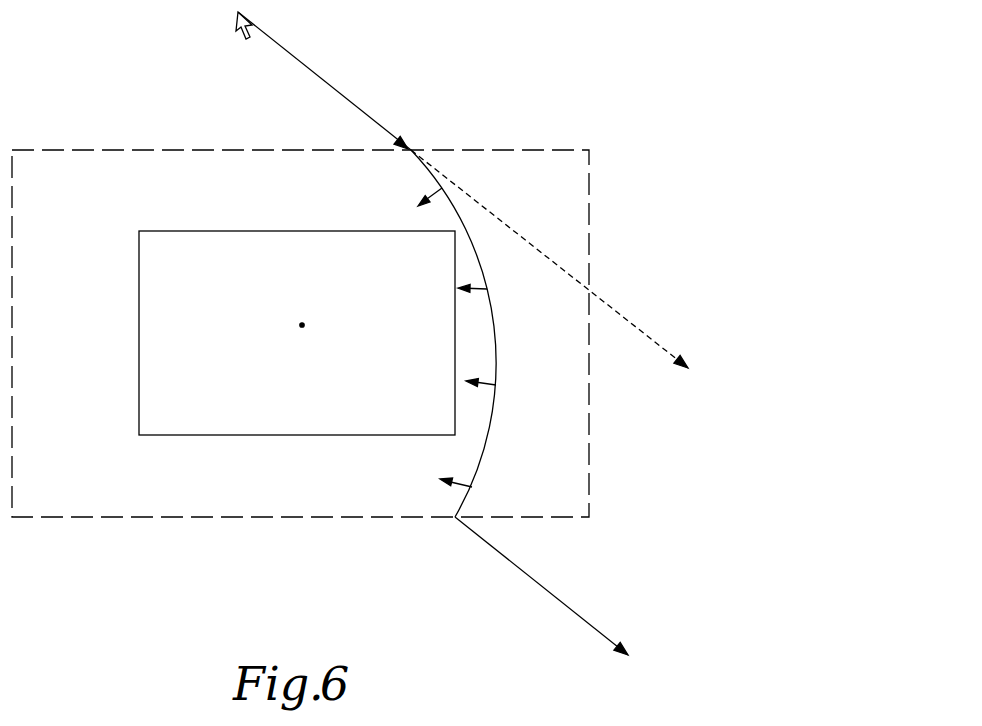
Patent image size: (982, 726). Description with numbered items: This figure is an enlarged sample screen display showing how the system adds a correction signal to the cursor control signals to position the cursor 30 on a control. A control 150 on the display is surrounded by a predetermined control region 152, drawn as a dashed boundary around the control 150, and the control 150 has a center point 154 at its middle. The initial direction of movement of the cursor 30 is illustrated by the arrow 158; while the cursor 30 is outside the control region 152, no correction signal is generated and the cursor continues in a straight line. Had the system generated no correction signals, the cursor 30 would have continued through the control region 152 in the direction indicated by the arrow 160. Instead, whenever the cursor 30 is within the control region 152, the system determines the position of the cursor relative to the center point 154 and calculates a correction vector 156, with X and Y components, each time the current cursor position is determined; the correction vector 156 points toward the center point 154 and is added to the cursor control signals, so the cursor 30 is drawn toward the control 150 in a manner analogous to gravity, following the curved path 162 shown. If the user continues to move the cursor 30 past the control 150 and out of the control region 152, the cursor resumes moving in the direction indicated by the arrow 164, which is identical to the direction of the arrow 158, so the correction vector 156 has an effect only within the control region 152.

The cursor 30 is at (236, 22).
The control 150 is at (208, 437).
The control region 152 is at (140, 519).
The center point 154 is at (302, 328).
The correction vector 156 is at (440, 187).
The arrow 158 is at (298, 56).
The arrow 160 is at (637, 330).
The deflection curve 162 is at (491, 432).
The arrow 164 is at (557, 597).